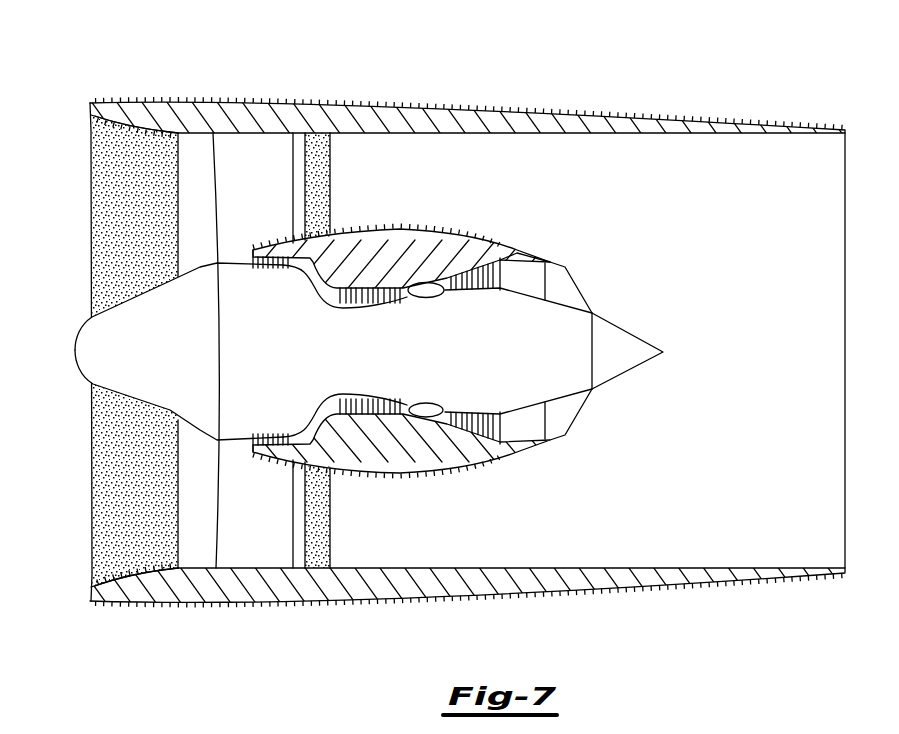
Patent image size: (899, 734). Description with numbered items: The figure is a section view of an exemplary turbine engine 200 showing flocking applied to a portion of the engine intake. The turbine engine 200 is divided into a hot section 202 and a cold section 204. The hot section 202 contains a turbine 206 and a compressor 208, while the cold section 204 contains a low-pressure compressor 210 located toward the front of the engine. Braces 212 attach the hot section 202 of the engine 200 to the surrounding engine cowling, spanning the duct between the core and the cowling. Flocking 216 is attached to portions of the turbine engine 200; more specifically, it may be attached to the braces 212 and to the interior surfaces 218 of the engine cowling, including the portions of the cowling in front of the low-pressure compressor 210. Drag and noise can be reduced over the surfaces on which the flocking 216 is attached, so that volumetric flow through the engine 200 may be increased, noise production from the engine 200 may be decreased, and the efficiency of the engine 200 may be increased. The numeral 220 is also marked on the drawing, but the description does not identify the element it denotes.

The turbine engine 200 is at (454, 347).
The hot section 202 is at (557, 422).
The cold section 204 is at (135, 240).
The turbine 206 is at (373, 305).
The compressor 208 is at (305, 426).
The low-pressure compressor 210 is at (188, 442).
The braces 212 is at (323, 198).
The flocking 216 is at (102, 124).
The interior surfaces 218 is at (163, 130).
The core cowl 220 is at (515, 249).